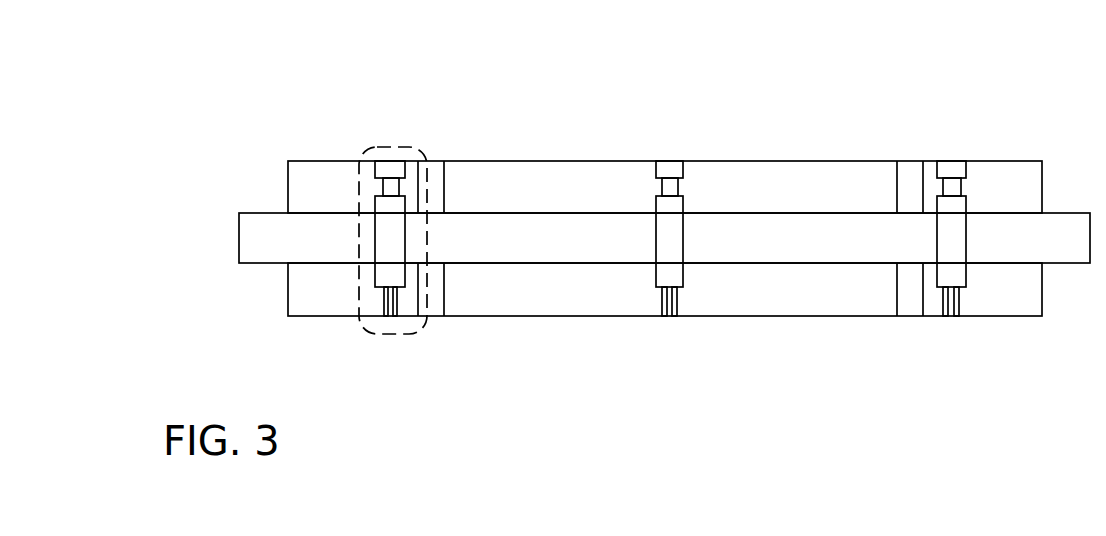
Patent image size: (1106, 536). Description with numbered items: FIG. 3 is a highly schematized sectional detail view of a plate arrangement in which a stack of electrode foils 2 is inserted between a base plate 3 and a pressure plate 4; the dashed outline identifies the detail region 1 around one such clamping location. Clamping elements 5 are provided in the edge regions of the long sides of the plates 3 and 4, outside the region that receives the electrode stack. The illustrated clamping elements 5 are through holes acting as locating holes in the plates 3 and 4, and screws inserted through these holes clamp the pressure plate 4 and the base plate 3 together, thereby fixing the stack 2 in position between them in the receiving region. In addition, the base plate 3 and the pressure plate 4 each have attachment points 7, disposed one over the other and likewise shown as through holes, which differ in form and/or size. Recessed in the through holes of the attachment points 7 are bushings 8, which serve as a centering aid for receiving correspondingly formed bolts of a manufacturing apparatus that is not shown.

The fastening arrangement / detail region 1 is at (352, 113).
The stack of electrode foils 2 is at (1067, 232).
The base plate 3 is at (304, 286).
The pressure plate 4 is at (319, 178).
The clamping element 5 is at (669, 232).
The attachment point 7 is at (427, 198).
The bushing 8 is at (912, 279).